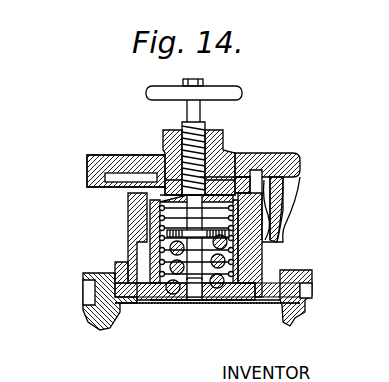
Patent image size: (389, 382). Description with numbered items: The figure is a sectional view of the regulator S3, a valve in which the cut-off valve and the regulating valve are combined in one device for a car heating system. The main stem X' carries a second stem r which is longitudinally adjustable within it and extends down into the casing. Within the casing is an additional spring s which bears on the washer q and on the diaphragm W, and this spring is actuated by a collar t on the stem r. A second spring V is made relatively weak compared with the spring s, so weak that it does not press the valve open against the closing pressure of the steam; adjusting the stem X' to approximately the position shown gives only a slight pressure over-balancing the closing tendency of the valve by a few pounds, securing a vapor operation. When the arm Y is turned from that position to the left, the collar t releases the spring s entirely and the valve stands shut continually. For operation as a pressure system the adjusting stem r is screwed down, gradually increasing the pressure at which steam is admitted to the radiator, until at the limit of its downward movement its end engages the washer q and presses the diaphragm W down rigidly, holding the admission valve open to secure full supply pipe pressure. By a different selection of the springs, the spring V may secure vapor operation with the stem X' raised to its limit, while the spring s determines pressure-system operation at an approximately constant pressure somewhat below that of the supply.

The second stem r is at (185, 107).
The main stem X' is at (173, 158).
The arm Y is at (297, 158).
The regulator S3 is at (296, 209).
The collar t is at (130, 220).
The additional spring s is at (140, 246).
The spring V is at (140, 275).
The diaphragm W is at (132, 305).
The washer q is at (163, 305).